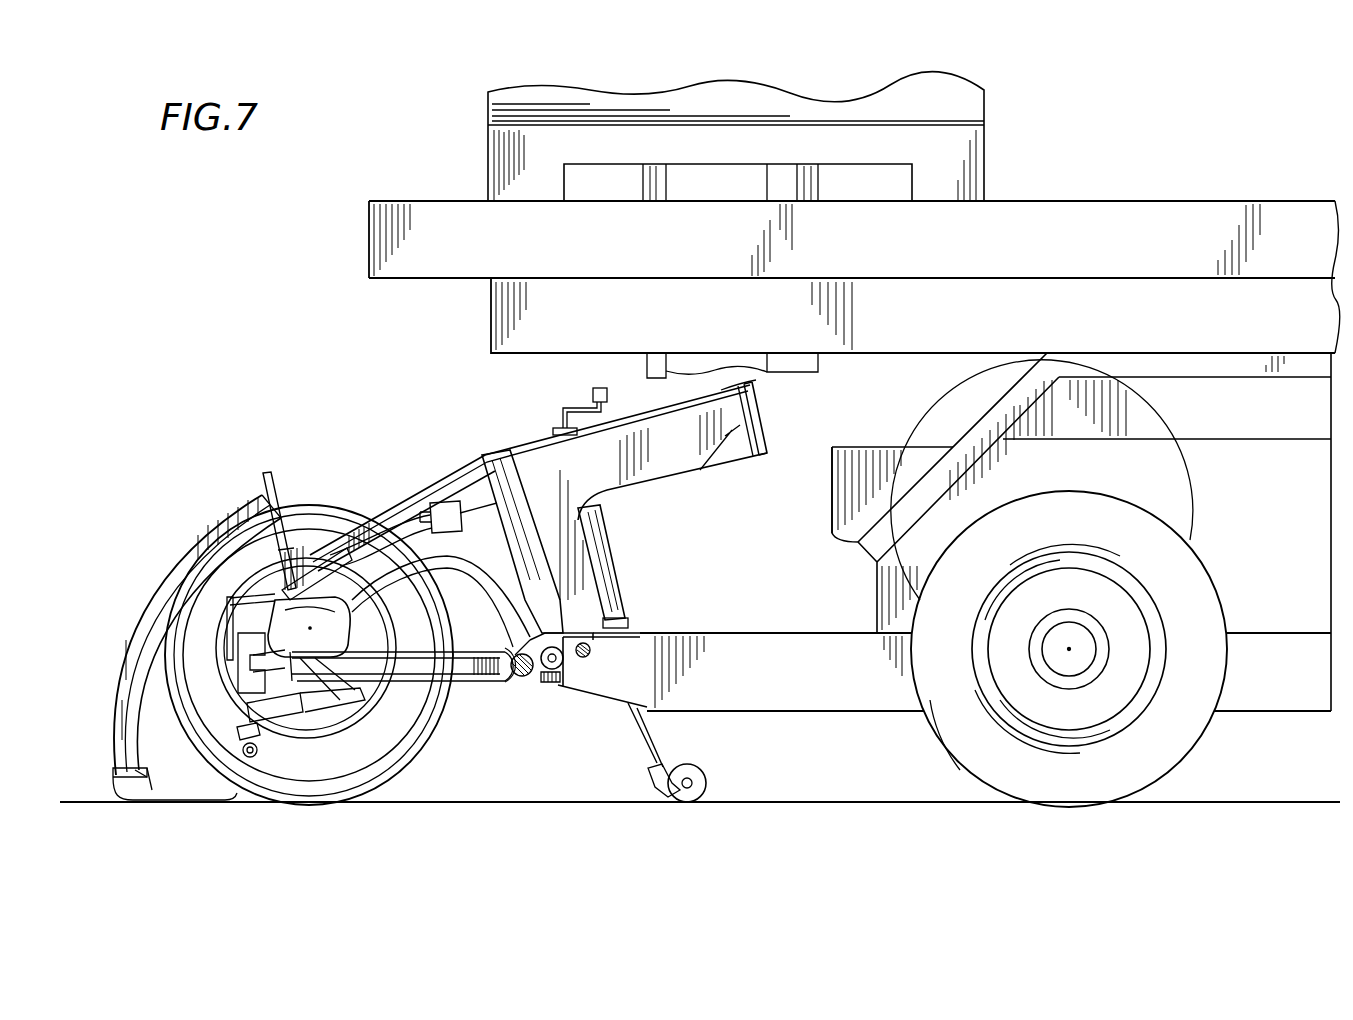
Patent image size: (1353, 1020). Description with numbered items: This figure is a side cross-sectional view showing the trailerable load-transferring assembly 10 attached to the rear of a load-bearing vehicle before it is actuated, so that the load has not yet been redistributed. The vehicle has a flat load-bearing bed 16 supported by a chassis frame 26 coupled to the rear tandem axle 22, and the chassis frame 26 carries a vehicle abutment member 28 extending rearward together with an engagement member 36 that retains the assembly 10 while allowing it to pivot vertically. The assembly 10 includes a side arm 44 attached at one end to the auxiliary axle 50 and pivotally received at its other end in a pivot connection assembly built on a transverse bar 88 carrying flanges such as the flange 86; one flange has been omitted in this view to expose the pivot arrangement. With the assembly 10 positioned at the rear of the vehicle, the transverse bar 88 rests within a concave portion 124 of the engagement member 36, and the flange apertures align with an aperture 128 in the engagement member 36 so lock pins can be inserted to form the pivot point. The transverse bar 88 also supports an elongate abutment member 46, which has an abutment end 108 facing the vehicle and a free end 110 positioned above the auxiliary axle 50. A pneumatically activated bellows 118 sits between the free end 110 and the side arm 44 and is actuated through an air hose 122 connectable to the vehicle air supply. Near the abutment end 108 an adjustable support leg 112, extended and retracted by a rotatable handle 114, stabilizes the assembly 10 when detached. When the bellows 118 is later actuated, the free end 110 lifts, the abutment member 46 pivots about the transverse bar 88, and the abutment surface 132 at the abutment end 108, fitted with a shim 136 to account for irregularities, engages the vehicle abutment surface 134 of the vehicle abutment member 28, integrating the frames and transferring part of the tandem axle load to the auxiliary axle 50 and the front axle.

The trailerable load-transferring assembly 10 is at (386, 410).
The load-bearing bed 16 is at (1098, 360).
The rear tandem axle 22 is at (1078, 640).
The chassis frame 26 is at (1268, 620).
The vehicle abutment member 28 is at (863, 447).
The engagement member 36 is at (605, 702).
The side arm 44 is at (458, 668).
The elongate abutment member 46 is at (676, 447).
The auxiliary axle 50 is at (345, 727).
The flange 86 is at (528, 683).
The transverse bar 88 is at (567, 627).
The abutment end 108 is at (733, 440).
The free end 110 is at (330, 560).
The adjustable support leg 112 is at (606, 540).
The rotatable handle 114 is at (593, 390).
The bellows 118 is at (287, 627).
The air hose 122 is at (568, 468).
The concave portion 124 is at (558, 685).
The aperture 128 is at (593, 652).
The abutment surface 132 is at (763, 427).
The vehicle abutment surface 134 is at (832, 480).
The shim 136 is at (763, 390).